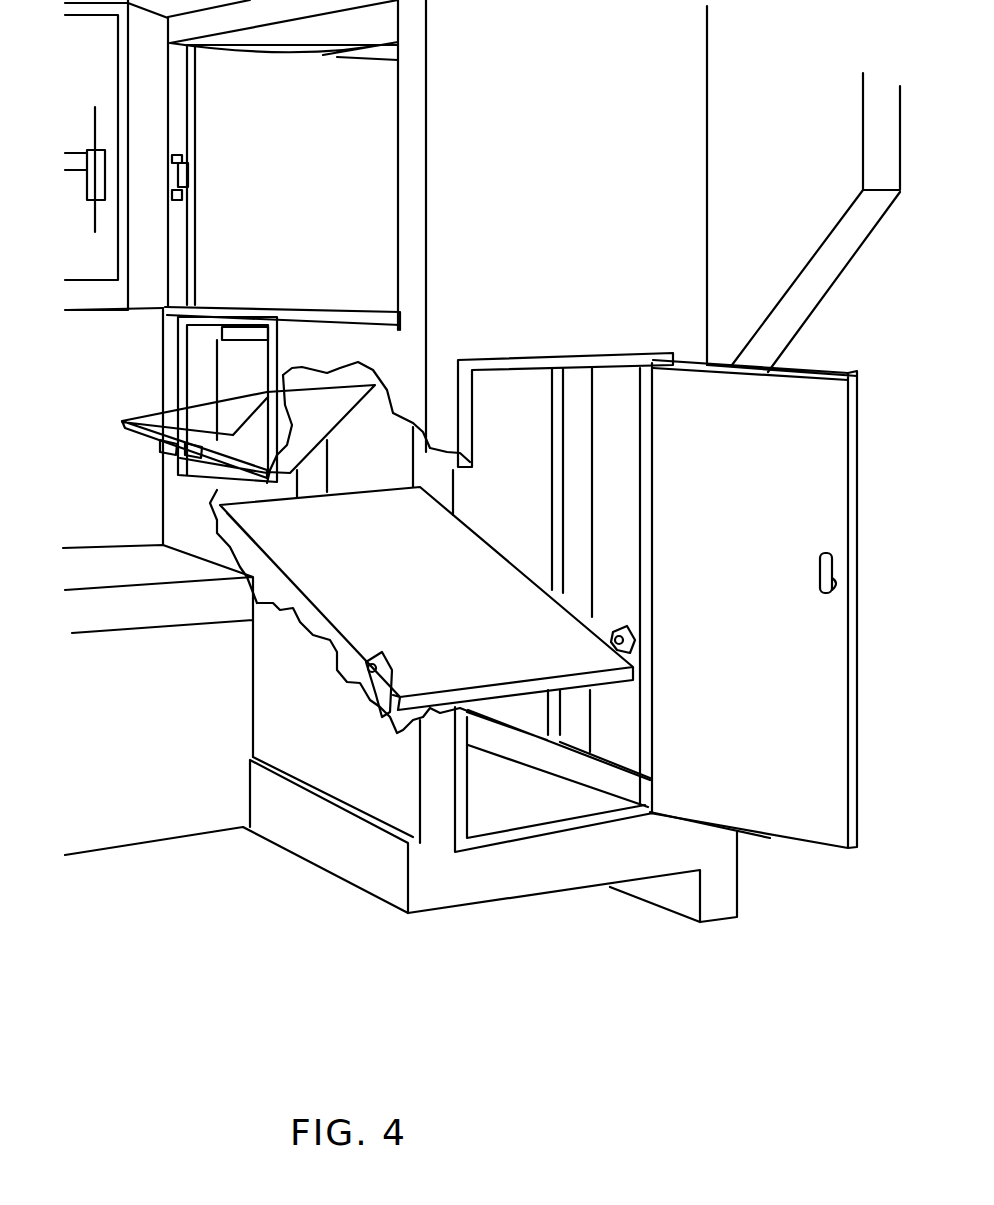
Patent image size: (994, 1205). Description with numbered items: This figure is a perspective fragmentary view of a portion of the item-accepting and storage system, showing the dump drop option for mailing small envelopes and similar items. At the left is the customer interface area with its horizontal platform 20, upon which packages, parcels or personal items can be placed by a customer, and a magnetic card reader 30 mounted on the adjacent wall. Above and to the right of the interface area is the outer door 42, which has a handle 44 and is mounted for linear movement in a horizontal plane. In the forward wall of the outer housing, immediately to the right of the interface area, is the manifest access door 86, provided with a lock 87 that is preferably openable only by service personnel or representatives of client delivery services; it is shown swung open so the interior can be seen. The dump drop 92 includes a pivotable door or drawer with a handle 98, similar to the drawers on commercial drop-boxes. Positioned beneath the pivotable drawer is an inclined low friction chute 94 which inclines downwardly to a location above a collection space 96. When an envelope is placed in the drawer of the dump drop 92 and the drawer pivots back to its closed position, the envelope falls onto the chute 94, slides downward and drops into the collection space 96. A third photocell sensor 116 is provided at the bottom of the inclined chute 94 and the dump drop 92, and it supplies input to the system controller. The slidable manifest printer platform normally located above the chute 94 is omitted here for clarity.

The horizontal platform 20 is at (141, 579).
The magnetic card reader 30 is at (78, 140).
The outer door 42 is at (306, 140).
The handle 44 is at (190, 190).
The manifest access door 86 is at (735, 595).
The lock 87 is at (838, 585).
The dump drop 92 is at (175, 407).
The inclined low friction chute 94 is at (379, 555).
The collection space 96 is at (561, 810).
The handle 98 is at (163, 450).
The third photocell sensor 116 is at (378, 660).